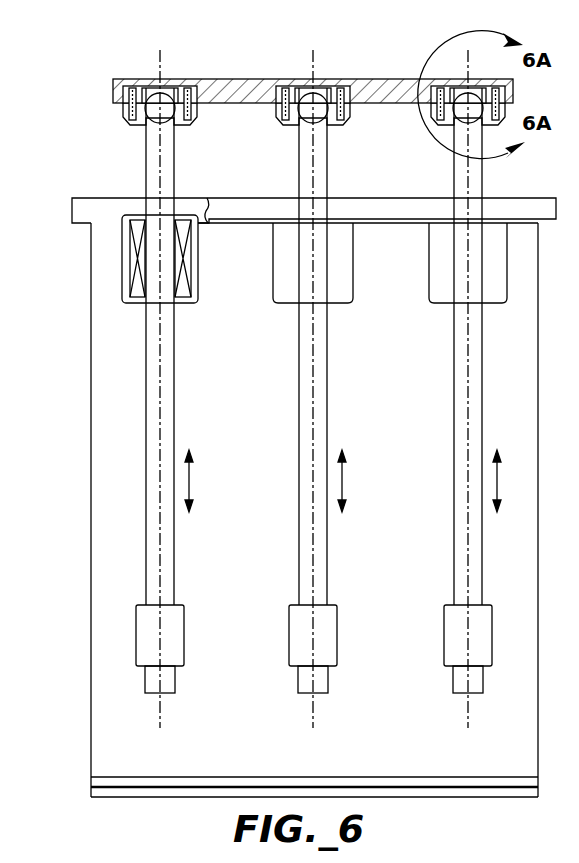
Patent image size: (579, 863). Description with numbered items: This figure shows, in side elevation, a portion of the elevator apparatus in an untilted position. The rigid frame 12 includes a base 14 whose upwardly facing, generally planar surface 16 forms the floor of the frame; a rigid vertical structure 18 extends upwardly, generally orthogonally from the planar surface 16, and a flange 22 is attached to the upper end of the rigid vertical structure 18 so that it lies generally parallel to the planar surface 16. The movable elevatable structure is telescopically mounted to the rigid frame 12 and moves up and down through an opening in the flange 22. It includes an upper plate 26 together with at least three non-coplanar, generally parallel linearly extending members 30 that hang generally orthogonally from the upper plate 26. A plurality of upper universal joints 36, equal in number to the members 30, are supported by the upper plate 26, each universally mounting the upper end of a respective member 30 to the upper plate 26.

The rigid frame 12 is at (80, 425).
The base 14 is at (80, 783).
The planar surface 16 is at (92, 777).
The rigid vertical structure 18 is at (91, 497).
The flange 22 is at (80, 223).
The upper plate 26 is at (118, 80).
The linearly extending members 30 is at (146, 175).
The upper universal joints 36 is at (198, 110).